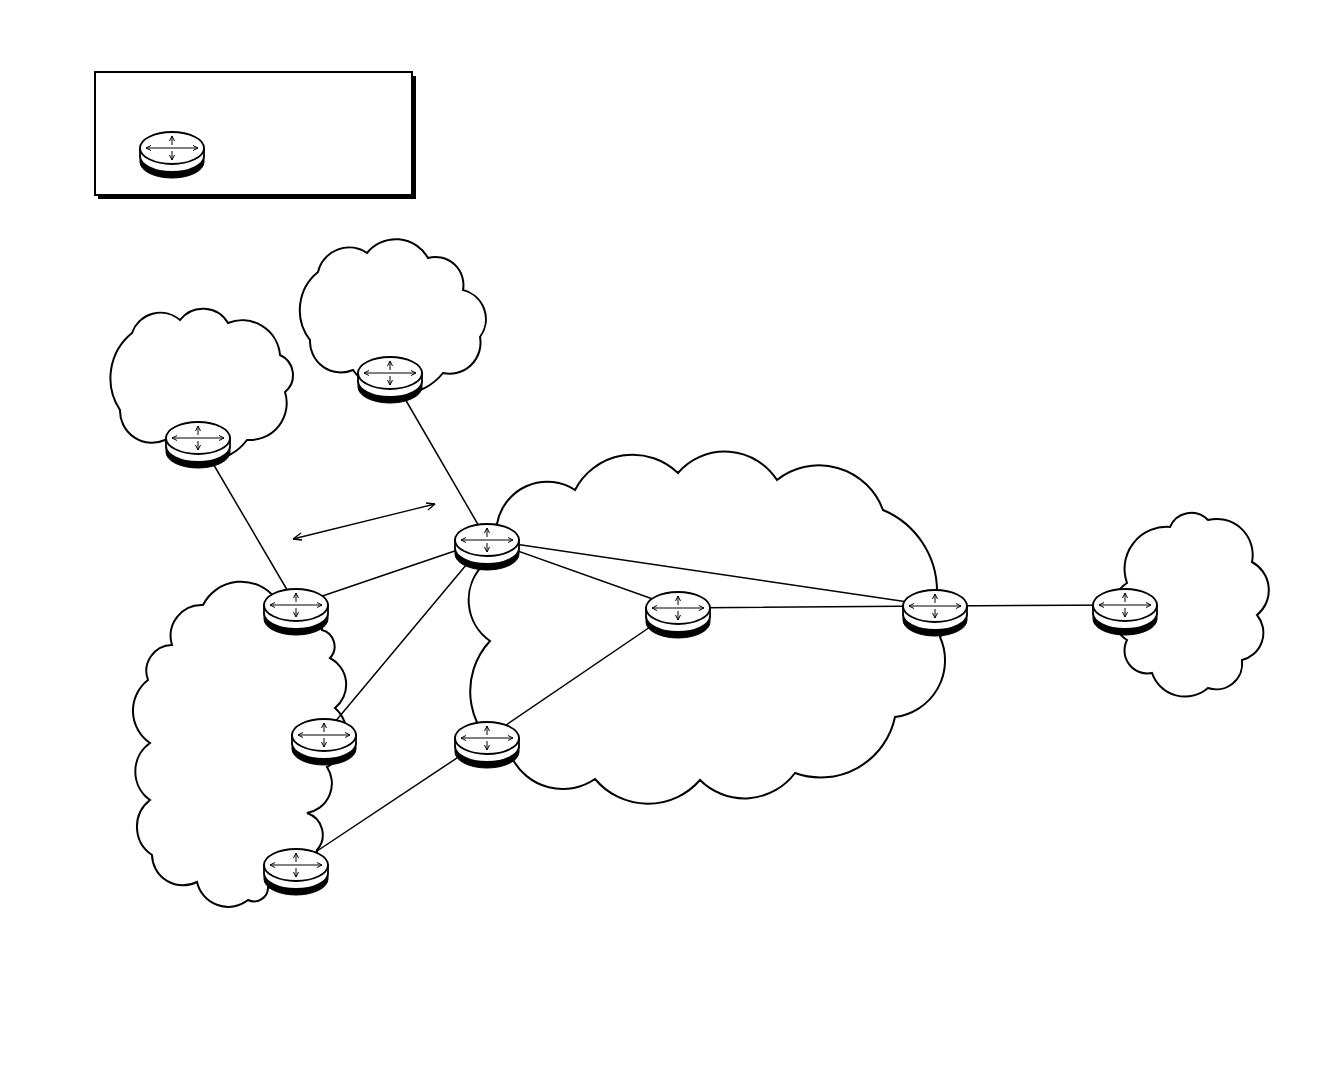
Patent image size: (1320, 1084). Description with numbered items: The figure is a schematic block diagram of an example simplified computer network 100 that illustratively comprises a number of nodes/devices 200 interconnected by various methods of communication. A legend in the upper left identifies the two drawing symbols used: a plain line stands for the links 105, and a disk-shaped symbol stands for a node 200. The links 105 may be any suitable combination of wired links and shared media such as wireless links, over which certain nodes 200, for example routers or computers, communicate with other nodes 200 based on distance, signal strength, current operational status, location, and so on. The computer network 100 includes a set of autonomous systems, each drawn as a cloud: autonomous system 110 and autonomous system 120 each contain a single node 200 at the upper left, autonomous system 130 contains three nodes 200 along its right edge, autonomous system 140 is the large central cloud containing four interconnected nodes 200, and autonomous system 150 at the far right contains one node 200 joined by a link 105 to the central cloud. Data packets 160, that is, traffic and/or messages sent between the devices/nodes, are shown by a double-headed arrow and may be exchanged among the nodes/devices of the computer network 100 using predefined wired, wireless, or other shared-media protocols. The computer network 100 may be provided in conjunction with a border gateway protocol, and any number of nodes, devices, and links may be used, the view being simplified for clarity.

The computer network 100 is at (1214, 131).
The links 105 is at (130, 103).
The nodes/devices 200 is at (648, 513).
The autonomous system 110 is at (235, 387).
The autonomous system 120 is at (427, 318).
The autonomous system 130 is at (255, 757).
The autonomous system 140 is at (768, 710).
The autonomous system 150 is at (1214, 637).
The data packets 160 is at (382, 533).